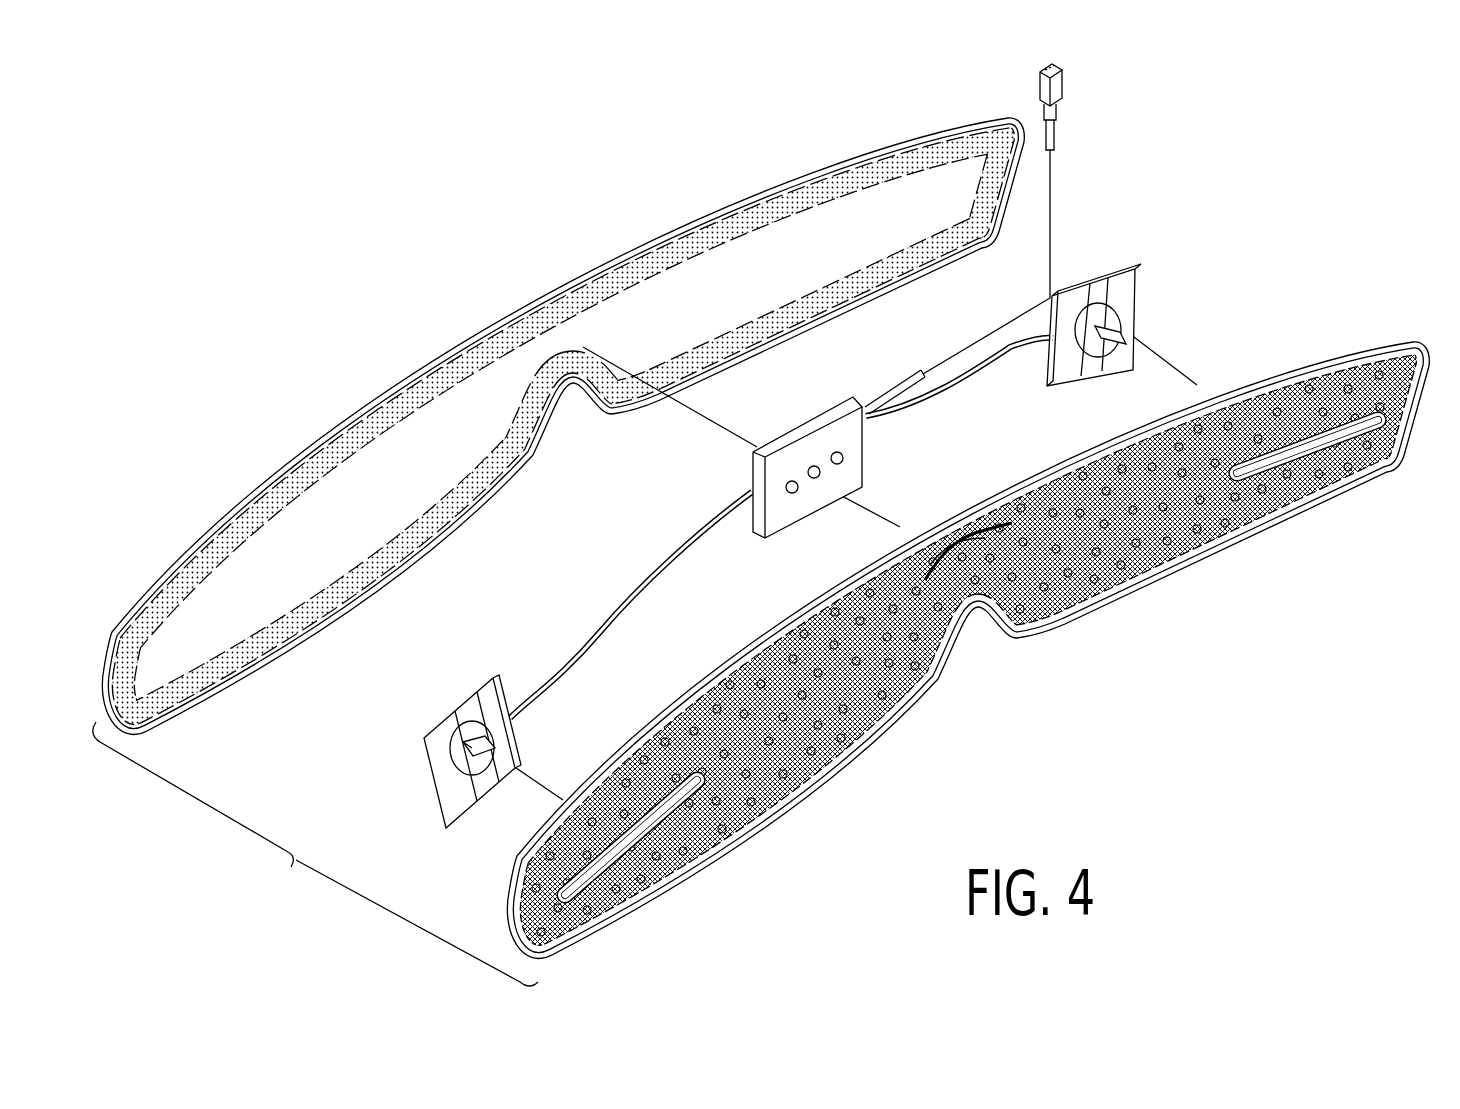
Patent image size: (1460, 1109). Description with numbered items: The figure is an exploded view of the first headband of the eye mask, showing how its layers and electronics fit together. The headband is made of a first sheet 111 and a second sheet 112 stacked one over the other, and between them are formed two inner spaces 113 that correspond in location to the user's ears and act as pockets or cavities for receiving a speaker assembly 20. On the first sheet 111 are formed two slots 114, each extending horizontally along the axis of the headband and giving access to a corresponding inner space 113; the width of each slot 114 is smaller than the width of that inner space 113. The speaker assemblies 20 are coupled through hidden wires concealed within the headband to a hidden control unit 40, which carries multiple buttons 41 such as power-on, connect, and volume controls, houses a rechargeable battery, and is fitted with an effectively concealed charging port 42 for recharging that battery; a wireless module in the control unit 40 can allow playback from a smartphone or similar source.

The second sheet 112 is at (360, 470).
The inner space 113 is at (563, 426).
The first sheet 111 is at (1068, 618).
The slot 114 is at (1330, 437).
The control unit 40 is at (864, 466).
The button 41 is at (815, 478).
The charging port 42 is at (1058, 90).
The speaker assembly 20 is at (437, 757).